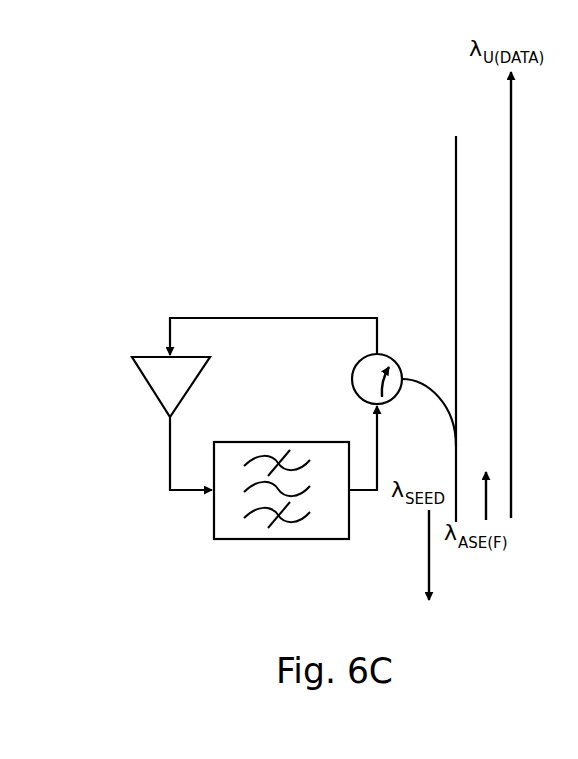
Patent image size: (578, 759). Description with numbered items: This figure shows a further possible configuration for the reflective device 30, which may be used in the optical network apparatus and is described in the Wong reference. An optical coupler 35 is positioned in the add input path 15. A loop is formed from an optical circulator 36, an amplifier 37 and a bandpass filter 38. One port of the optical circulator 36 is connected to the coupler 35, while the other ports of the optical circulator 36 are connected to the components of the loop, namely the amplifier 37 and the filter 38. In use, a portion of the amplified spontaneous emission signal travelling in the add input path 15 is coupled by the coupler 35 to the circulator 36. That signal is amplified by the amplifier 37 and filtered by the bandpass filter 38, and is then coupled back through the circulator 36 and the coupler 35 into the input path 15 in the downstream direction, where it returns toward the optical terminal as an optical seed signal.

The reflective device 30 is at (233, 248).
The add input path 15 is at (455, 190).
The optical coupler 35 is at (457, 443).
The optical circulator 36 is at (387, 355).
The amplifier 37 is at (145, 384).
The bandpass filter 38 is at (214, 520).